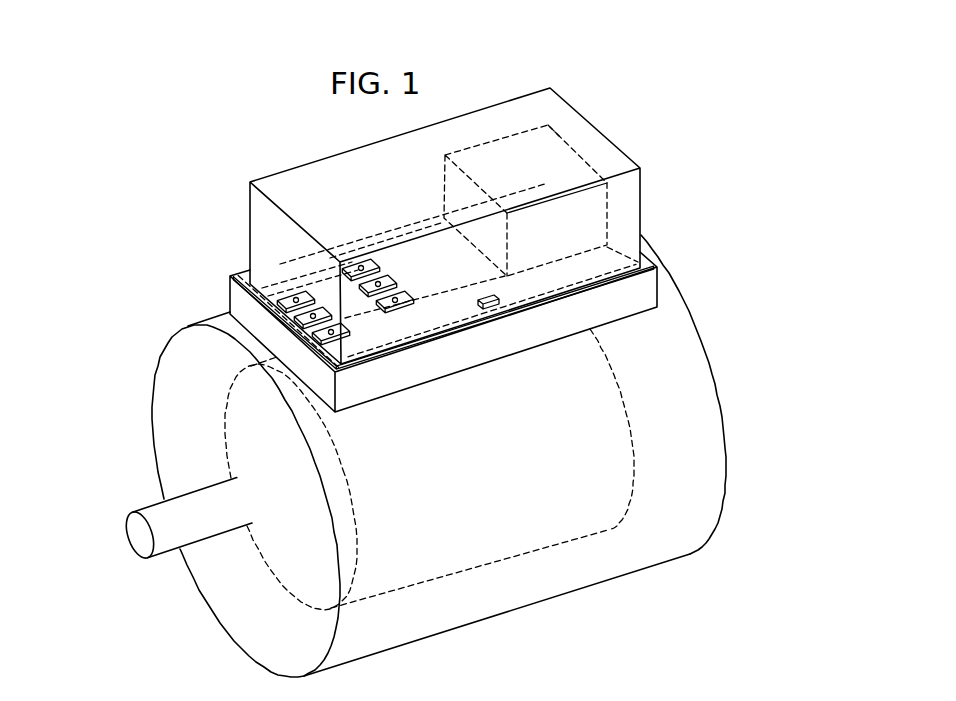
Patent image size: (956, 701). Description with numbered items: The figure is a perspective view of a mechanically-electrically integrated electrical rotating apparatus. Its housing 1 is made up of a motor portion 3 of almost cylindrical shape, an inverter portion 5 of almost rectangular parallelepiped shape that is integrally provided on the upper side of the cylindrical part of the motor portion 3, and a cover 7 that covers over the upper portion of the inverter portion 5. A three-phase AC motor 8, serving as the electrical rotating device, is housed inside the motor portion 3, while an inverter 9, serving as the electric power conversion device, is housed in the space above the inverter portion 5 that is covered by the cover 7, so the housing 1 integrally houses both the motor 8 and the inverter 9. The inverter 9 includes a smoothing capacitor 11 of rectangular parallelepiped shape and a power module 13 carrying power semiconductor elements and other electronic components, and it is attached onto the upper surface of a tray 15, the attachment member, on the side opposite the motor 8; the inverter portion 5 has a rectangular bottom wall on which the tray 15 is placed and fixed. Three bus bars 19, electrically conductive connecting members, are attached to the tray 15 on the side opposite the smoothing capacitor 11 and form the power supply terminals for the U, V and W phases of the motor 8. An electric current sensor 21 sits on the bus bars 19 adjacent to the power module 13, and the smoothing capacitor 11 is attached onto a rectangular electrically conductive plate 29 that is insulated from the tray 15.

The housing 1 is at (446, 456).
The motor portion 3 is at (707, 377).
The inverter portion 5 is at (648, 297).
The cover 7 is at (641, 190).
The three-phase AC motor 8 is at (534, 546).
The inverter 9 is at (576, 163).
The smoothing capacitor 11 is at (544, 138).
The power module 13 is at (427, 253).
The tray 15 is at (287, 300).
The bus bars 19 is at (395, 294).
The electric current sensor 21 is at (402, 322).
The electrically conductive plate 29 is at (500, 305).